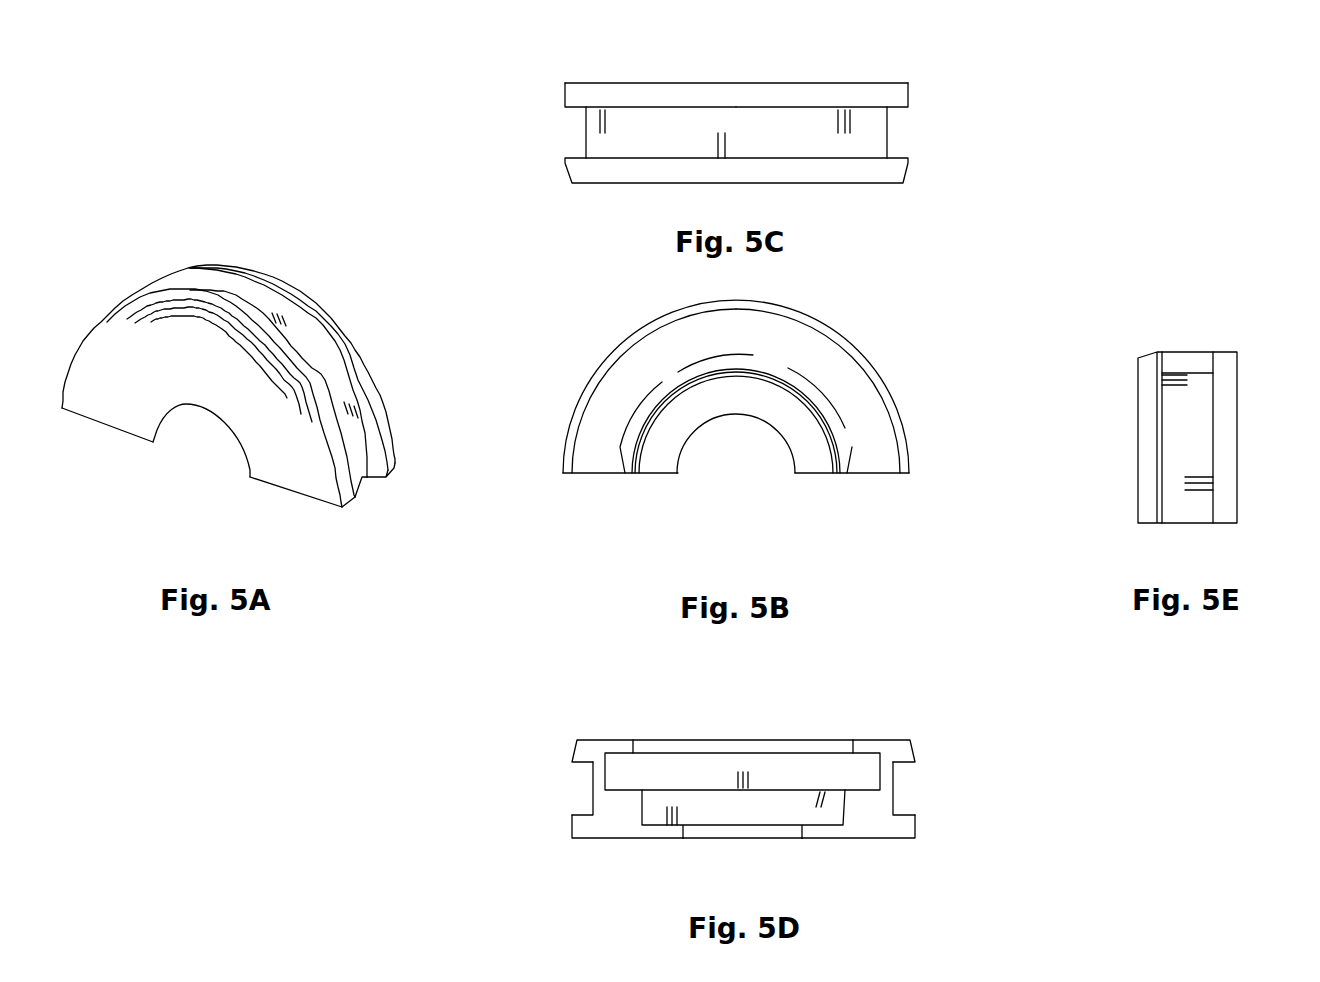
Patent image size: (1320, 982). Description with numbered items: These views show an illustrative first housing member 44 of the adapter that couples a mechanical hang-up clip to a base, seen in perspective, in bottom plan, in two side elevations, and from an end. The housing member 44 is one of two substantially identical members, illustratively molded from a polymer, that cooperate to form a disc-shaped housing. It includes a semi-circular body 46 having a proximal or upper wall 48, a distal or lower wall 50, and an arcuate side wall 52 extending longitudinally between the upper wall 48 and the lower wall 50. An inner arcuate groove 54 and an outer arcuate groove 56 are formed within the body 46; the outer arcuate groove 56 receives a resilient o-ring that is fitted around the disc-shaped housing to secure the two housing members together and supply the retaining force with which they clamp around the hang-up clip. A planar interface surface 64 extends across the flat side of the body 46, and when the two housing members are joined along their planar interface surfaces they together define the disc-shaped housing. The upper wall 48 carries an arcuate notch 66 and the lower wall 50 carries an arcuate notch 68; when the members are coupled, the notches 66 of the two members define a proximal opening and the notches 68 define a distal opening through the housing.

In FIG. 5A, the housing member 44 is at (165, 245).
In FIG. 5C, the housing member 44 is at (522, 102).
In FIG. 5B, the housing member 44 is at (912, 363).
In FIG. 5D, the housing member 44 is at (925, 715).
In FIG. 5E, the housing member 44 is at (1163, 330).
In FIG. 5A, the semi-circular body 46 is at (86, 332).
In FIG. 5C, the semi-circular body 46 is at (640, 83).
In FIG. 5B, the semi-circular body 46 is at (620, 352).
In FIG. 5D, the semi-circular body 46 is at (590, 842).
In FIG. 5E, the semi-circular body 46 is at (1237, 470).
In FIG. 5A, the upper wall 48 is at (110, 397).
In FIG. 5C, the upper wall 48 is at (835, 83).
In FIG. 5B, the upper wall 48 is at (817, 457).
In FIG. 5D, the upper wall 48 is at (866, 842).
In FIG. 5E, the upper wall 48 is at (1237, 382).
In FIG. 5A, the lower wall 50 is at (308, 300).
In FIG. 5C, the lower wall 50 is at (612, 183).
In FIG. 5B, the lower wall 50 is at (597, 460).
In FIG. 5D, the lower wall 50 is at (602, 738).
In FIG. 5E, the lower wall 50 is at (1137, 440).
In FIG. 5A, the arcuate side wall 52 is at (365, 480).
In FIG. 5C, the arcuate side wall 52 is at (586, 133).
In FIG. 5D, the arcuate side wall 52 is at (593, 789).
In FIG. 5D, the inner arcuate groove 54 is at (607, 772).
In FIG. 5A, the outer arcuate groove 56 is at (358, 455).
In FIG. 5C, the outer arcuate groove 56 is at (887, 133).
In FIG. 5D, the outer arcuate groove 56 is at (893, 788).
In FIG. 5E, the outer arcuate groove 56 is at (1183, 373).
In FIG. 5B, the planar interface surface 64 is at (873, 473).
In FIG. 5A, the arcuate notch 66 is at (170, 432).
In FIG. 5B, the arcuate notch 66 is at (773, 423).
In FIG. 5D, the arcuate notch 66 is at (802, 836).
In FIG. 5B, the arcuate notch 68 is at (640, 463).
In FIG. 5D, the arcuate notch 68 is at (852, 743).